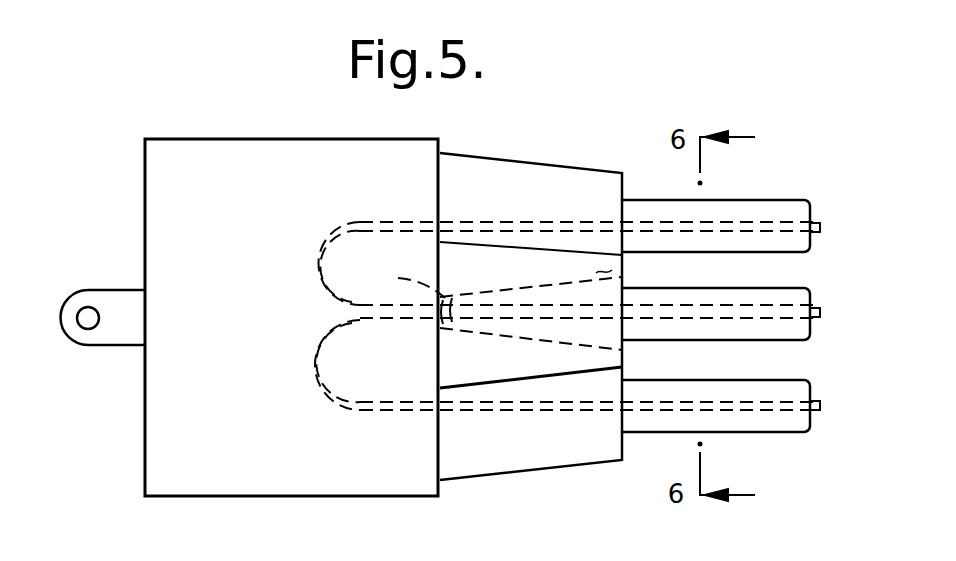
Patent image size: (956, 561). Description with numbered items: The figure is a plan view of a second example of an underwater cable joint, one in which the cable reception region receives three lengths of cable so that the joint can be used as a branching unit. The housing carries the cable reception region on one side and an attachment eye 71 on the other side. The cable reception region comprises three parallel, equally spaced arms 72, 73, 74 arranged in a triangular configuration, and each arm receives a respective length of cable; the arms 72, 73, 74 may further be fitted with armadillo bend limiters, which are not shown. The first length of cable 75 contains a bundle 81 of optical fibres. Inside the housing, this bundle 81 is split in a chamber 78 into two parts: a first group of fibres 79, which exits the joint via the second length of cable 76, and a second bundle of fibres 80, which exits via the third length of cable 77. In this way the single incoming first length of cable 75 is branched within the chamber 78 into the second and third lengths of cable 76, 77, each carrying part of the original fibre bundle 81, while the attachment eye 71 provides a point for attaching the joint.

The attachment eye 71 is at (88, 306).
The arm 72 is at (600, 273).
The arm 73 is at (553, 173).
The arm 74 is at (550, 456).
The first length of cable 75 is at (780, 297).
The second length of cable 76 is at (780, 207).
The third length of cable 77 is at (780, 389).
The chamber 78 is at (157, 178).
The first group of fibres 79 is at (360, 222).
The second bundle of fibres 80 is at (365, 410).
The bundle of optical fibres 81 is at (589, 306).